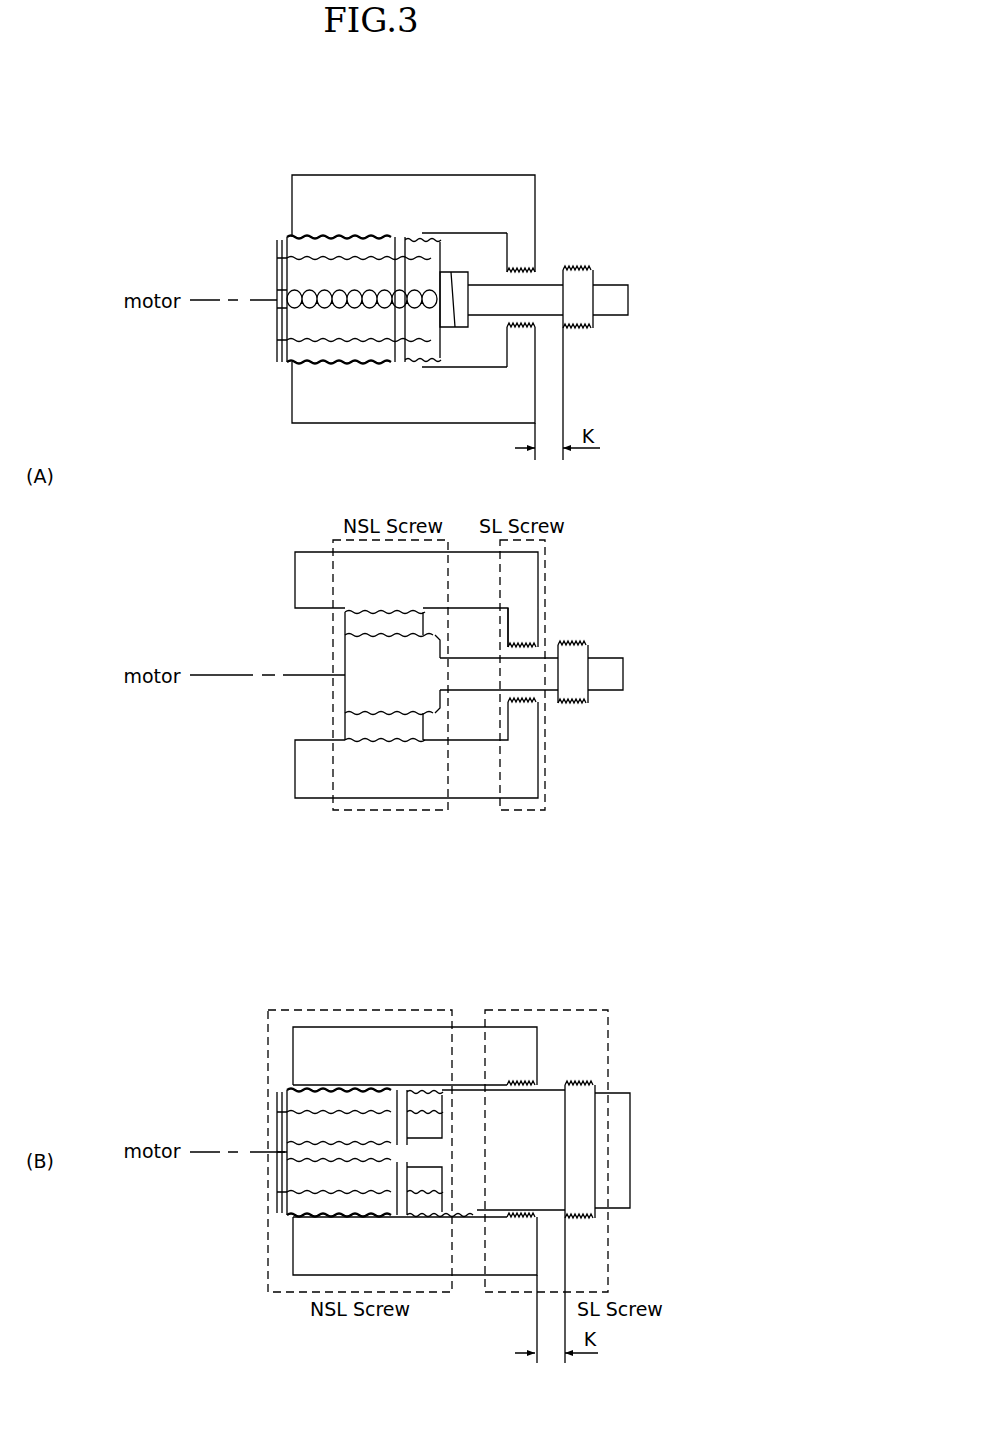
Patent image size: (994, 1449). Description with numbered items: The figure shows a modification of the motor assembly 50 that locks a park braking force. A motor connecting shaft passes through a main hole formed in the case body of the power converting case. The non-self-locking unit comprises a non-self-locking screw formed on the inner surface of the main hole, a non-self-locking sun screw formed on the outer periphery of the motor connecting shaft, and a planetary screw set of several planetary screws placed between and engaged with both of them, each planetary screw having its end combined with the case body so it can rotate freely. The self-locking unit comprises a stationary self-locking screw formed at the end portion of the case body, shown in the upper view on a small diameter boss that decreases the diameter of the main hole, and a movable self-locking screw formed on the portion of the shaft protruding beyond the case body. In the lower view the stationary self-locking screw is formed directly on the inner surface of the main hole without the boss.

The lens shift driving unit 50 is at (580, 242).